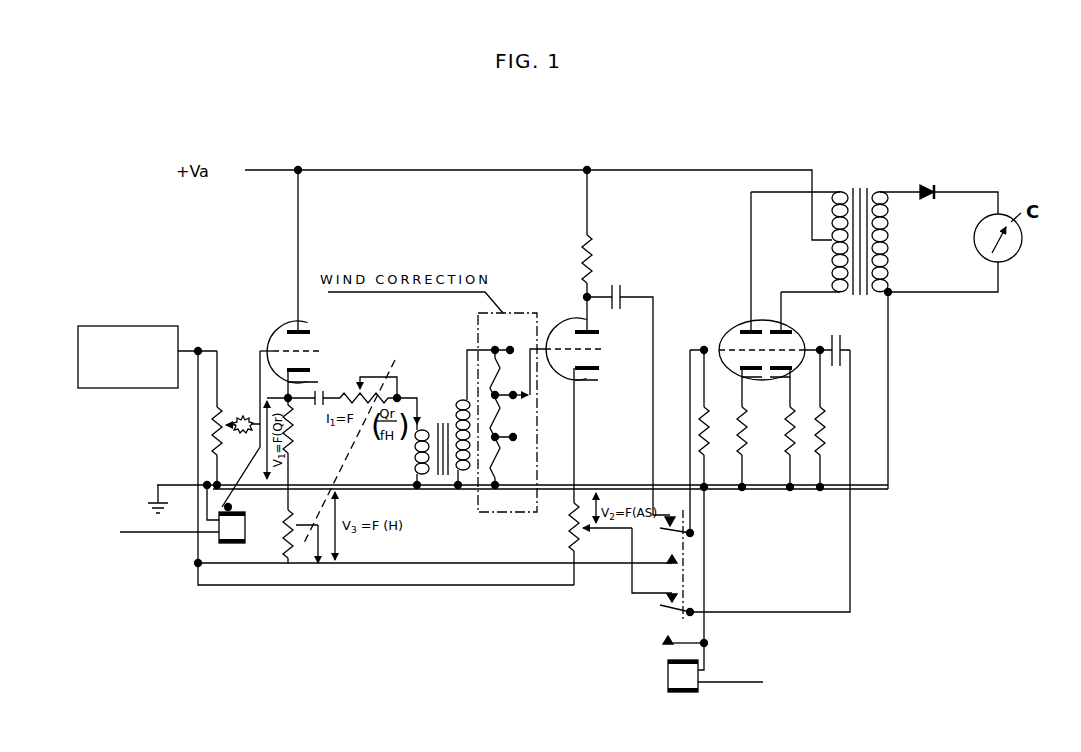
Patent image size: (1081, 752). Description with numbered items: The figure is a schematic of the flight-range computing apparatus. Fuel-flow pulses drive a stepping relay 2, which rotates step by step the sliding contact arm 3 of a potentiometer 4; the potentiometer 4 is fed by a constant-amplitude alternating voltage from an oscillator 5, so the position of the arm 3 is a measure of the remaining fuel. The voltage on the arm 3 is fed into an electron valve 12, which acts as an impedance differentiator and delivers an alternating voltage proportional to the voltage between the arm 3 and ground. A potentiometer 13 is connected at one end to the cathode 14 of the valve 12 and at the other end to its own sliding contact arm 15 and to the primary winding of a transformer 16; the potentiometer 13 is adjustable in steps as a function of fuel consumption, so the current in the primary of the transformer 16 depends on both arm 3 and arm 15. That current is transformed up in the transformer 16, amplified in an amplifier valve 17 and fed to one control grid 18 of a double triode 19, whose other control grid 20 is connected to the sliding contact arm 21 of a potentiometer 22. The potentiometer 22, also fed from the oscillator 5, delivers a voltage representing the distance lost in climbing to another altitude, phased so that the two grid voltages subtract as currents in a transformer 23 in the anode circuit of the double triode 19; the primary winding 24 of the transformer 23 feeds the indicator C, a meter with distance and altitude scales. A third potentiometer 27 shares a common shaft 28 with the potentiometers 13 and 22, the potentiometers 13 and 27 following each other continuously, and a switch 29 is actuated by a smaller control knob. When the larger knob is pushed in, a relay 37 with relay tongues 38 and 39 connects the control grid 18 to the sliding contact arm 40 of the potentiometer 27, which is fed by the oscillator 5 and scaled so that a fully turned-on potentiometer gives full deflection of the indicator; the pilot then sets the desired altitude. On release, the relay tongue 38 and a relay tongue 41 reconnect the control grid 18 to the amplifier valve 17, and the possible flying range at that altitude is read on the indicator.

The stepping relay 2 is at (246, 541).
The sliding contact arm 3 is at (228, 420).
The potentiometer 4 is at (214, 446).
The oscillator 5 is at (122, 389).
The electron valve 12 is at (268, 333).
The potentiometer 13 is at (340, 397).
The cathode 14 is at (311, 371).
The sliding contact arm 15 is at (367, 377).
The transformer 16 is at (441, 476).
The amplifier valve 17 is at (571, 322).
The control grid 18 is at (742, 350).
The double triode 19 is at (752, 320).
The control grid 20 is at (797, 350).
The sliding contact arm 21 is at (590, 529).
The potentiometer 22 is at (568, 531).
The transformer 23 is at (860, 191).
The primary winding 24 is at (890, 268).
The potentiometer 27 is at (283, 520).
The shaft 28 is at (343, 470).
The switch 29 is at (514, 398).
The relay 37 is at (668, 676).
The relay tongue 38 is at (666, 532).
The relay tongue 39 is at (667, 565).
The sliding contact arm 40 is at (304, 544).
The relay tongue 41 is at (632, 405).